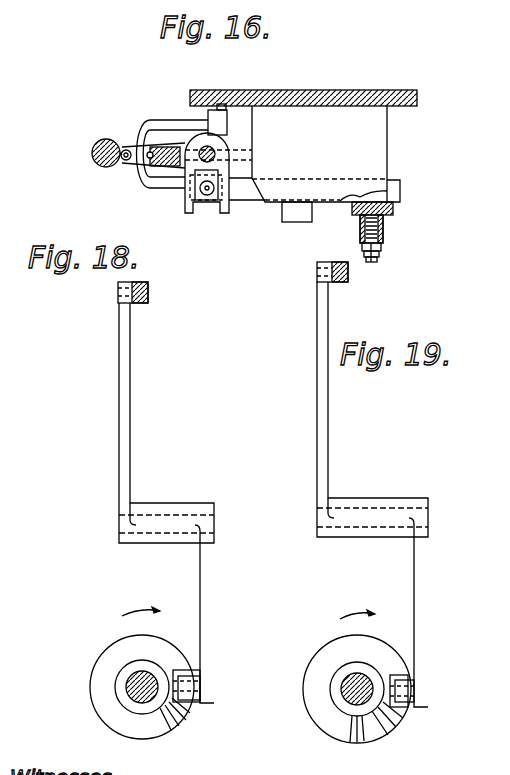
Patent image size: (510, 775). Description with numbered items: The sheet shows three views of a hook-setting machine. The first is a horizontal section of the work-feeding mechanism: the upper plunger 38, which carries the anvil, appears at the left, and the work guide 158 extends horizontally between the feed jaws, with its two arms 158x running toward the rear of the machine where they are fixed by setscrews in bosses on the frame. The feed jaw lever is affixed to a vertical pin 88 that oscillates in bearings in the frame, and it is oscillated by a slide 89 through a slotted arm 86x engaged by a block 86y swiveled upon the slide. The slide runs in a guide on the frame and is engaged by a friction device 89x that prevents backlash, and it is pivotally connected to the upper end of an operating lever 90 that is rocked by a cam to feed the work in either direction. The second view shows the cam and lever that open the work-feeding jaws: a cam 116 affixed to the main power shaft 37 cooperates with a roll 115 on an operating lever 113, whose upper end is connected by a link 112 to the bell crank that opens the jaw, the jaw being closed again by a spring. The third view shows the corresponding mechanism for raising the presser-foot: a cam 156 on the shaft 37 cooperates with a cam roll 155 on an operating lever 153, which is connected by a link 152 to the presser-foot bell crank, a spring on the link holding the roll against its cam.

In FIG. 16, the arms 158x is at (178, 120).
In FIG. 16, the work guide 158 is at (148, 134).
In FIG. 16, the plunger 38 is at (92, 155).
In FIG. 16, the slotted arm 86x is at (187, 205).
In FIG. 16, the block 86y is at (208, 207).
In FIG. 16, the pin 88 is at (214, 150).
In FIG. 16, the slide 89 is at (252, 202).
In FIG. 16, the friction device 89x is at (375, 200).
In FIG. 16, the operating lever 90 is at (295, 223).
In FIG. 18, the link 112 is at (149, 300).
In FIG. 18, the operating lever 113 is at (123, 424).
In FIG. 18, the cam 116 is at (137, 645).
In FIG. 18, the main power shaft 37 is at (127, 688).
In FIG. 19, the main power shaft 37 is at (342, 688).
In FIG. 18, the roll 115 is at (185, 713).
In FIG. 19, the link 152 is at (338, 284).
In FIG. 19, the operating lever 153 is at (317, 366).
In FIG. 19, the cam 156 is at (350, 648).
In FIG. 19, the cam roll 155 is at (400, 710).